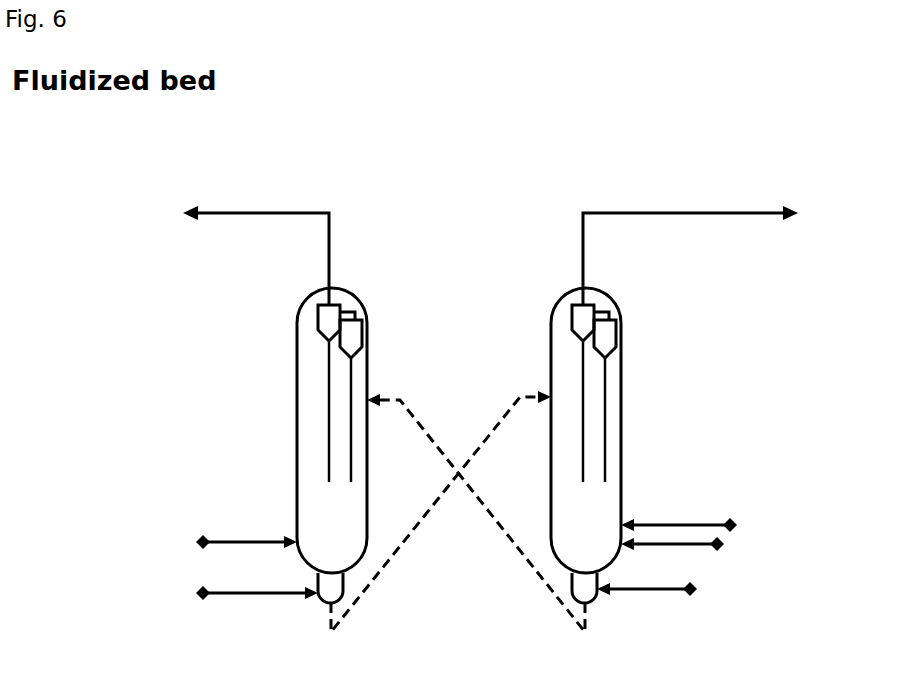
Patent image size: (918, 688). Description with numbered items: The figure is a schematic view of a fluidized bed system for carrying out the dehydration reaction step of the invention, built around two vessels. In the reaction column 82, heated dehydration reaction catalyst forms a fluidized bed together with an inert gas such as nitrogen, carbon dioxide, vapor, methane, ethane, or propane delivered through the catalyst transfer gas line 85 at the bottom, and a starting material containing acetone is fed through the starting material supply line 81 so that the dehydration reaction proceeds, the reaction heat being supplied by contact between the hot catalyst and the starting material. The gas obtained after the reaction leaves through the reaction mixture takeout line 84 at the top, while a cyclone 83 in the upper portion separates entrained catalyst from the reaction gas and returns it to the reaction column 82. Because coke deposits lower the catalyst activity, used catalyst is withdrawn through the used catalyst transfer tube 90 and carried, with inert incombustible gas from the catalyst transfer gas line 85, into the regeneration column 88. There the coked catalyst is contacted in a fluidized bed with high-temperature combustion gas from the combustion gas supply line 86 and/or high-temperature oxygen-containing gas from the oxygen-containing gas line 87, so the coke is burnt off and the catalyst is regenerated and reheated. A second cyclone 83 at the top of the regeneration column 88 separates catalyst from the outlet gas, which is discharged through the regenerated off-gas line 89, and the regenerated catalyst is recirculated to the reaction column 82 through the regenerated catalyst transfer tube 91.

The starting material supply line 81 is at (237, 519).
The reaction column 82 is at (302, 428).
The cyclone 83 is at (510, 363).
The reaction mixture takeout line 84 is at (253, 236).
The catalyst transfer gas line 85 is at (448, 622).
The combustion gas supply line 86 is at (690, 563).
The oxygen-containing gas line 87 is at (682, 504).
The regeneration column 88 is at (553, 428).
The regenerated off-gas line 89 is at (690, 236).
The used catalyst transfer tube 90 is at (441, 511).
The regenerated catalyst transfer tube 91 is at (476, 522).